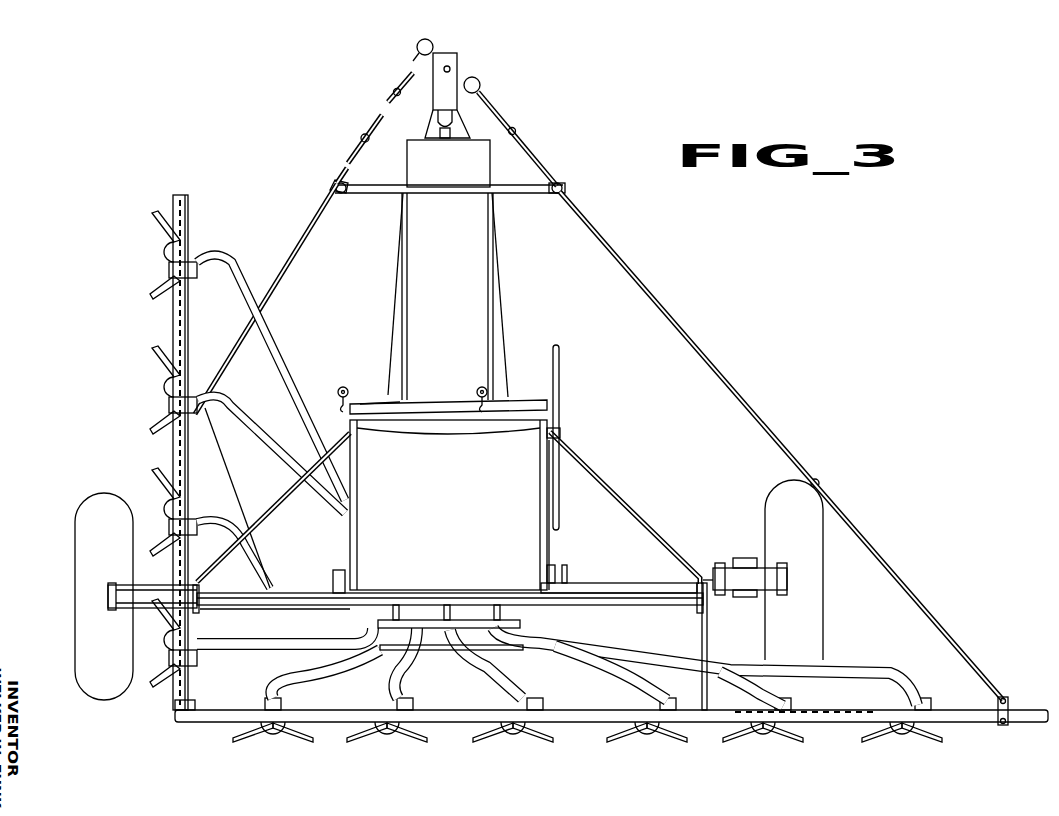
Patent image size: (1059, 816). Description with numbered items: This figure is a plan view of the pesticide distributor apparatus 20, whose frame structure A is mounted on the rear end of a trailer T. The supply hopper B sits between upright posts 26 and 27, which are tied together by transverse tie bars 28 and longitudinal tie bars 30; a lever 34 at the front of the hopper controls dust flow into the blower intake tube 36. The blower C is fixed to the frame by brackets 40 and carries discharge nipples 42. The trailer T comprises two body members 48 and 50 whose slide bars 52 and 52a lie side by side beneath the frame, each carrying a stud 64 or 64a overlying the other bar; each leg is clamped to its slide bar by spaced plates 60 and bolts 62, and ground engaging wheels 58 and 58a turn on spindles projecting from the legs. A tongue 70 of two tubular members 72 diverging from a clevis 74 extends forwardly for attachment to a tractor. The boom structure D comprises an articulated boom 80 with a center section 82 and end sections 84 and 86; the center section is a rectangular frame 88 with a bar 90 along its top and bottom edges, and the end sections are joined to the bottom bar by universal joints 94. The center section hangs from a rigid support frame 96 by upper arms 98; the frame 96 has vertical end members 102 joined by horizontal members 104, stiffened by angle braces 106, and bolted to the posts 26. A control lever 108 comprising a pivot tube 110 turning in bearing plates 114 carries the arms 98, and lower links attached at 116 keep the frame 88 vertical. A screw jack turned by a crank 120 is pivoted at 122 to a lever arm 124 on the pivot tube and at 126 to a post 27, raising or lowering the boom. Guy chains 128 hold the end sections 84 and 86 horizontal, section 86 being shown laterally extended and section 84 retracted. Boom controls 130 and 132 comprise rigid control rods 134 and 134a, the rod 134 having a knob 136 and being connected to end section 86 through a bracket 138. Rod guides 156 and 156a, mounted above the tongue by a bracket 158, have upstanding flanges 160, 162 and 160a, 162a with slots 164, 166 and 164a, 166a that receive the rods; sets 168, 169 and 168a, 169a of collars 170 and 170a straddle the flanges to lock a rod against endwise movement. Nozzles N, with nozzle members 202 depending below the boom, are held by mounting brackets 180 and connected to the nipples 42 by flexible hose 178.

The pesticide distributor apparatus 20 is at (758, 290).
The post 26 is at (365, 590).
The post 27 is at (475, 432).
The transverse tie bars 28 is at (560, 403).
The longitudinal tie bars 30 is at (562, 447).
The lever 34 is at (350, 396).
The blower intake tube 36 is at (447, 605).
The brackets 40 is at (396, 605).
The discharge nipples 42 is at (440, 645).
The trailer body member 48 is at (108, 602).
The trailer body member 50 is at (790, 580).
The slide bar 52 is at (610, 580).
The slide bar 52a is at (126, 586).
The ground engaging wheel 58 is at (825, 598).
The ground engaging wheel 58a is at (104, 596).
The spaced plates 60 is at (740, 565).
The bolts 62 is at (730, 598).
The stud 64 is at (340, 570).
The stud 64a is at (568, 575).
The tongue 70 is at (502, 330).
The tubular members 72 is at (497, 370).
The clevis 74 is at (455, 56).
The articulated boom 80 is at (190, 726).
The center boom section 82 is at (208, 690).
The boom end section 84 is at (192, 206).
The boom end section 86 is at (1020, 722).
The rectangular frame 88 is at (318, 698).
The bar 90 is at (562, 708).
The universal joints 94 is at (178, 708).
The support frame 96 is at (620, 583).
The upper arms 98 is at (200, 672).
The end members 102 is at (205, 590).
The horizontal members 104 is at (650, 595).
The angle braces 106 is at (262, 518).
The control lever 108 is at (640, 612).
The pivot tube 110 is at (240, 611).
The bearing plates 114 is at (320, 611).
The link attachment 116 is at (560, 442).
The crank 120 is at (561, 350).
The jack pivot attachment 122 is at (545, 575).
The lever arm 124 is at (560, 612).
The jack pivot attachment 126 is at (563, 425).
The guy chain 128 is at (178, 318).
The boom control 130 is at (300, 240).
The boom control 132 is at (612, 250).
The control rod 134 is at (657, 251).
The control rod 134a is at (328, 192).
The knob 136 is at (481, 81).
The bracket 138 is at (203, 418).
The rod guide 156 is at (563, 186).
The rod guide 156a is at (342, 196).
The bracket 158 is at (550, 197).
The flange 160 is at (563, 189).
The flange 160a is at (330, 186).
The flange 162 is at (545, 185).
The flange 162a is at (348, 186).
The slot 164 is at (562, 185).
The slot 164a is at (336, 198).
The slot 166 is at (548, 195).
The slot 166a is at (350, 195).
The set of collars 168 is at (555, 198).
The set of collars 168a is at (362, 132).
The set of collars 169 is at (810, 482).
The set of collars 169a is at (334, 182).
The collar 170 is at (565, 185).
The collar 170a is at (350, 176).
The flexible tubing 178 is at (216, 398).
The nozzle mounting bracket 180 is at (198, 264).
The spray nozzle 202 is at (160, 268).
The frame structure A is at (527, 396).
The supply hopper B is at (448, 505).
The blower C is at (468, 668).
The boom structure D is at (176, 720).
The nozzles N is at (150, 296).
The trailer T is at (725, 562).